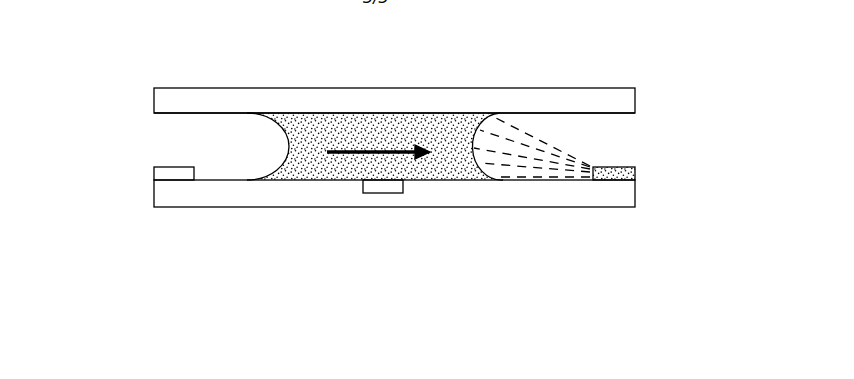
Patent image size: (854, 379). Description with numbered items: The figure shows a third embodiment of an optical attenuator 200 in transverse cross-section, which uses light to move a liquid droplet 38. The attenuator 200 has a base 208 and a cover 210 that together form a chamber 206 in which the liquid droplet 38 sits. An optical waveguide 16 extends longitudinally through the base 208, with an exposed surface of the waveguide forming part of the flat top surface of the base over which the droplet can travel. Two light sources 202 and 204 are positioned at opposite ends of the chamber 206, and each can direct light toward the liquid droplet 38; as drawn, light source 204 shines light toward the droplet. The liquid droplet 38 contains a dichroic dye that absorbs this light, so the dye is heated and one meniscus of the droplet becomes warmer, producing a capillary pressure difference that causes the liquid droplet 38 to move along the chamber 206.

The optical attenuator 200 is at (611, 46).
The cover 210 is at (217, 102).
The liquid droplet 38 is at (452, 95).
The base 208 is at (207, 192).
The optical waveguide 16 is at (407, 187).
The light source 202 is at (195, 171).
The light source 204 is at (625, 165).
The chamber 206 is at (157, 147).